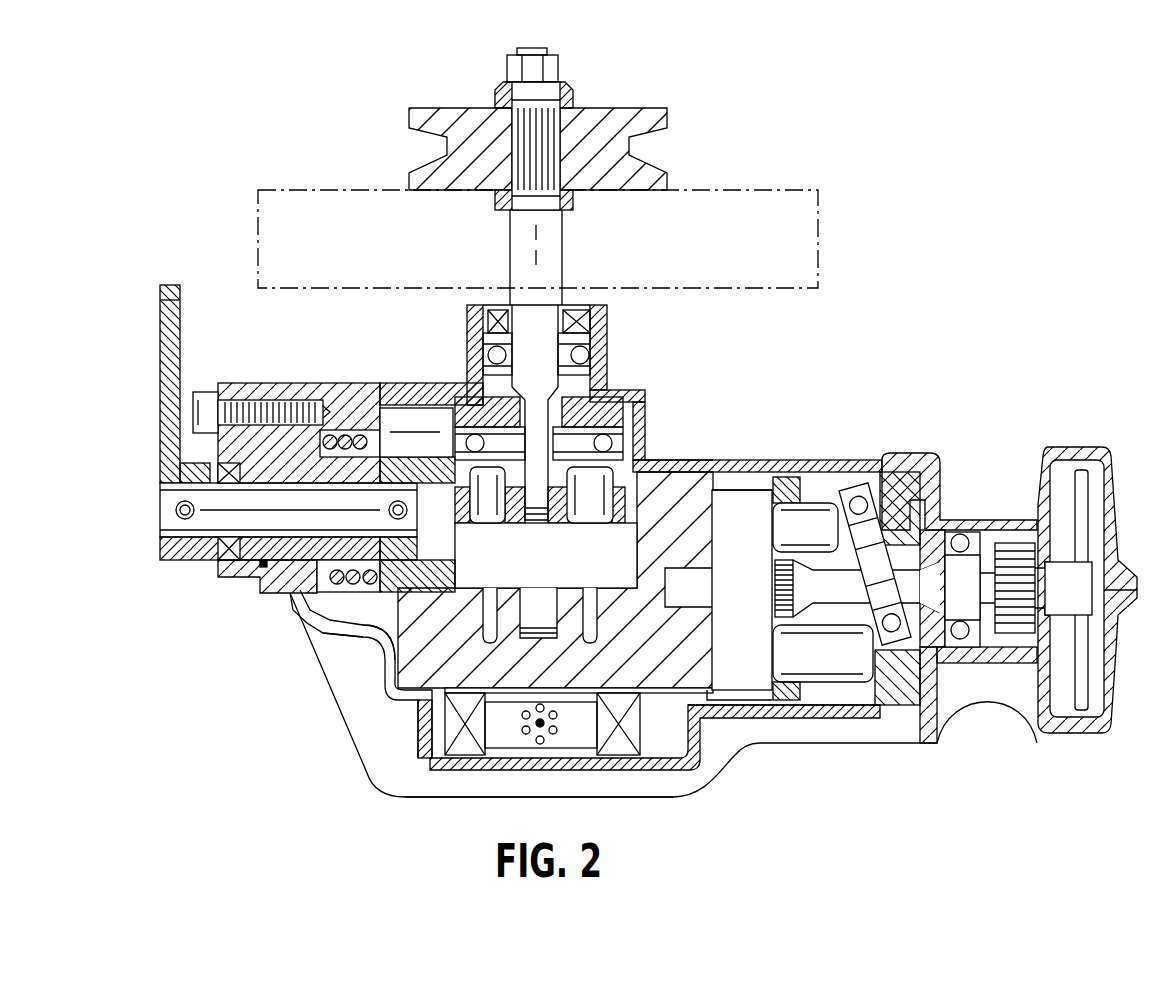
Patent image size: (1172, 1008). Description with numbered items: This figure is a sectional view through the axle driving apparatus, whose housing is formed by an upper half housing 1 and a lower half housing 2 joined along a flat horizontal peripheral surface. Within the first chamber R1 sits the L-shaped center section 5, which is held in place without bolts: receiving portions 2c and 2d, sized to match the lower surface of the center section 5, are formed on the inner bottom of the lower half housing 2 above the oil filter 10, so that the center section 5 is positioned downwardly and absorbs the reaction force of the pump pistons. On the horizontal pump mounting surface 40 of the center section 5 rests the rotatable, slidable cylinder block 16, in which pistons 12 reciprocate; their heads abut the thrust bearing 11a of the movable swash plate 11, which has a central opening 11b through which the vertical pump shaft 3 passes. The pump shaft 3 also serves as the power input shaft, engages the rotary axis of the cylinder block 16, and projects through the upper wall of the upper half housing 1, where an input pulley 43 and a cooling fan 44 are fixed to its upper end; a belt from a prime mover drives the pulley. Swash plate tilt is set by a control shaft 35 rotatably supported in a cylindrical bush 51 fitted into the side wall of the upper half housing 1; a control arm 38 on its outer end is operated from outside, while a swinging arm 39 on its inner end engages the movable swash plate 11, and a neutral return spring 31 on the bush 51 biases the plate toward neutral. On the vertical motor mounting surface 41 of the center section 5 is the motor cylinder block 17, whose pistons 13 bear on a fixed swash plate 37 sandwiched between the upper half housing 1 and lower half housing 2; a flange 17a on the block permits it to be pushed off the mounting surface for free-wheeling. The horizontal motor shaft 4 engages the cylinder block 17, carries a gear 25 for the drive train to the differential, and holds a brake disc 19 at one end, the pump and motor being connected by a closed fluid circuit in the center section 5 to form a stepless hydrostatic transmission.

The upper half housing 1 is at (940, 452).
The lower half housing 2 is at (937, 745).
The receiving portion 2c is at (383, 690).
The receiving portion 2d is at (740, 722).
The pump shaft 3 is at (562, 248).
The motor shaft 4 is at (956, 587).
The center section 5 is at (373, 640).
The oil filter 10 is at (367, 773).
The movable swash plate 11 is at (623, 402).
The thrust bearing 11a is at (640, 400).
The opening 11b is at (592, 372).
The pistons 12 is at (630, 446).
The pistons 13 is at (830, 503).
The cylinder block 16 is at (653, 493).
The cylinder block 17 is at (732, 490).
The flange 17a is at (780, 470).
The brake disc 19 is at (1080, 448).
The gear 25 is at (1012, 543).
The neutral return spring 31 is at (367, 420).
The control shaft 35 is at (160, 515).
The fixed swash plate 37 is at (875, 470).
The control arm 38 is at (165, 284).
The swinging arm 39 is at (400, 408).
The pump mounting surface 40 is at (320, 640).
The motor mounting surface 41 is at (712, 458).
The input pulley 43 is at (668, 108).
The cooling fan 44 is at (818, 188).
The cylindrical bush 51 is at (232, 578).
The first chamber R1 is at (823, 705).